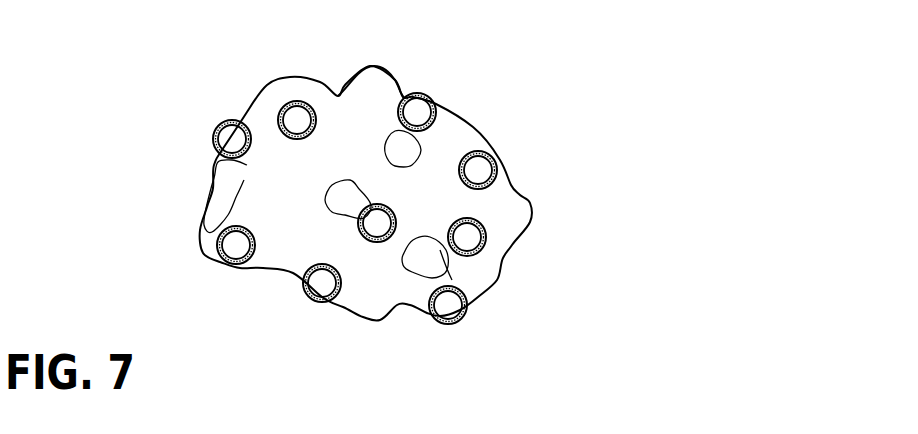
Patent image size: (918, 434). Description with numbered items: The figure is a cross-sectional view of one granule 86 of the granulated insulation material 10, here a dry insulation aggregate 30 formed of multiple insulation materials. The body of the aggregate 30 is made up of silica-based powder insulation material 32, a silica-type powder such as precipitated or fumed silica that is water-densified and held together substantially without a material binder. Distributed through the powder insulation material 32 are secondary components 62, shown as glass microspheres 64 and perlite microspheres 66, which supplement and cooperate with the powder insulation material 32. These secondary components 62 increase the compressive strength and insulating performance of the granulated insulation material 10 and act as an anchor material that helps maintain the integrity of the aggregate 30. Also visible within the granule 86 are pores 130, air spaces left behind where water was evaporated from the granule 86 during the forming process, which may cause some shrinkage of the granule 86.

The granulated insulation material 10 is at (330, 163).
The silica-based aggregate 30 is at (238, 273).
The silica-based powder insulation material 32 is at (460, 138).
The secondary components 62 is at (215, 120).
The glass microspheres 64 is at (425, 94).
The perlite microspheres 66 is at (385, 82).
The granule 86 is at (168, 196).
The pores 130 is at (435, 232).